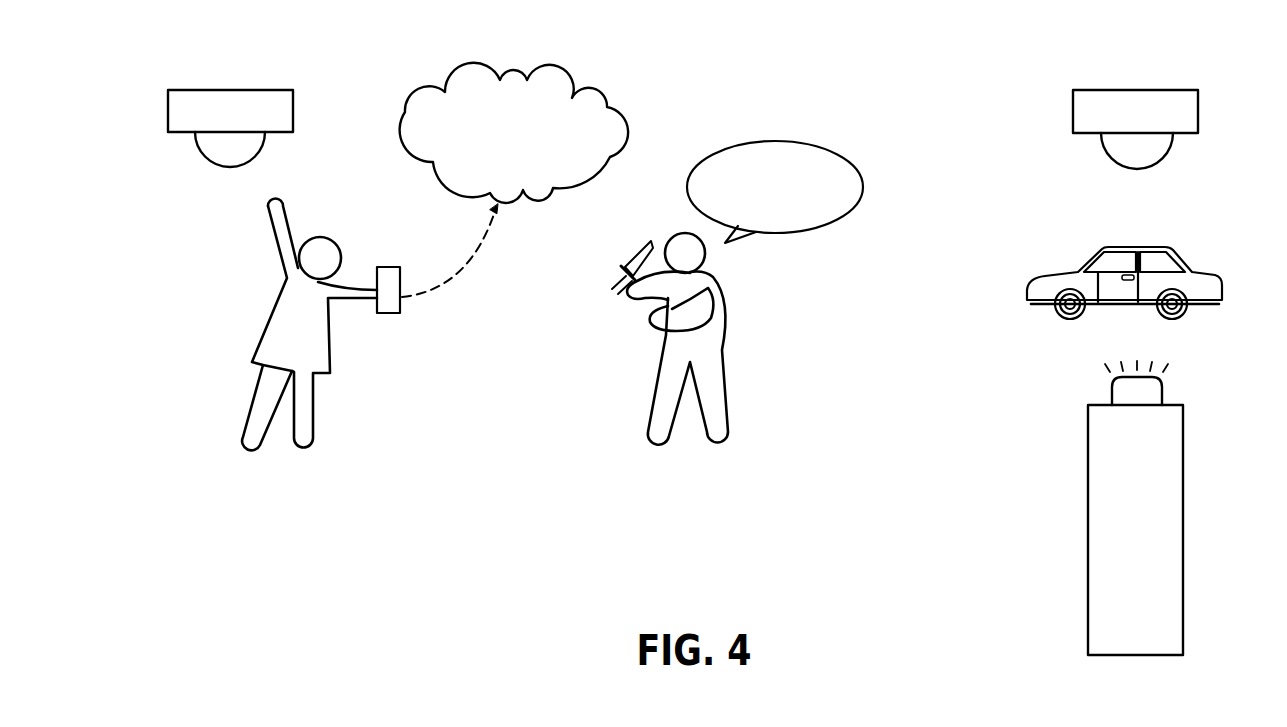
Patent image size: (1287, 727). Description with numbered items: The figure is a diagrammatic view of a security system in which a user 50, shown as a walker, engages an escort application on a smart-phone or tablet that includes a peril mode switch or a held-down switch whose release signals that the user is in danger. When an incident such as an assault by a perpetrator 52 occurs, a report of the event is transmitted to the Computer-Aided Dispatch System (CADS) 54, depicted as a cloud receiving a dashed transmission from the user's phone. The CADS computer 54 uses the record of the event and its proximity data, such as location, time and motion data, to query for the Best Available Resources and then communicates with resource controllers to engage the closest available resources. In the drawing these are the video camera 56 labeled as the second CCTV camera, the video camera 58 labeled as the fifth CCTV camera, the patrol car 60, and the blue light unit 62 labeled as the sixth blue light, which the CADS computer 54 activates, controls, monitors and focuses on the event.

The user 50 is at (251, 216).
The perpetrator 52 is at (738, 328).
The Computer-Aided Dispatch System (CADS) 54 is at (553, 63).
The video camera 56 is at (230, 88).
The video camera 58 is at (1135, 88).
The patrol car 60 is at (1206, 281).
The blue light unit 62 is at (1184, 530).